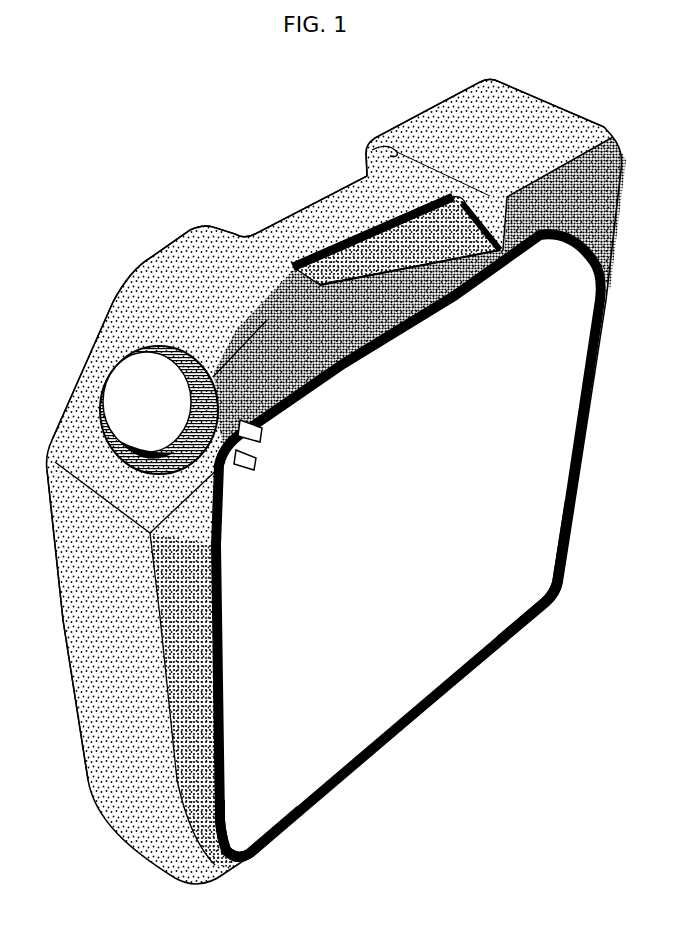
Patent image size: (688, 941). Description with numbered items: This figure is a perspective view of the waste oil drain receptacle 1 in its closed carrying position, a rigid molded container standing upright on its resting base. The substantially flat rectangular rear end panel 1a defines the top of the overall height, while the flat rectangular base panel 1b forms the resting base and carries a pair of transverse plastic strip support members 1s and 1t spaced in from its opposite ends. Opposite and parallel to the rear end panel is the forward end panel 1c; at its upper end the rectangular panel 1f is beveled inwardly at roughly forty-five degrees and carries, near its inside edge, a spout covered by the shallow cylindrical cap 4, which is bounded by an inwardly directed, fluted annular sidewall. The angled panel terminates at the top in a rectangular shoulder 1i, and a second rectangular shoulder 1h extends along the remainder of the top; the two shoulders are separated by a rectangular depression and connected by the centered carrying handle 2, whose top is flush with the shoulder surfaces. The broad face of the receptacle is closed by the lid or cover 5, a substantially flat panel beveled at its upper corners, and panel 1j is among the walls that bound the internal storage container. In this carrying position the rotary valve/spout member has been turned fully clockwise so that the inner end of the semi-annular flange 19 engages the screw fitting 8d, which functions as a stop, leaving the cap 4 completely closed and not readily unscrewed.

The receptacle 1 is at (115, 297).
The rear end panel 1a is at (624, 198).
The base panel 1b is at (461, 677).
The forward end panel 1c is at (93, 663).
The beveled panel 1f is at (73, 440).
The rectangular shoulder 1h is at (436, 115).
The rectangular shoulder 1i is at (190, 250).
The panel 1j is at (420, 262).
The support member 1s is at (253, 860).
The support member 1t is at (537, 615).
The carrying handle 2 is at (310, 214).
The cylindrical cap 4 is at (117, 390).
The lid or cover 5 is at (551, 400).
The screw fitting 8d is at (253, 460).
The semi-annular flange 19 is at (267, 433).